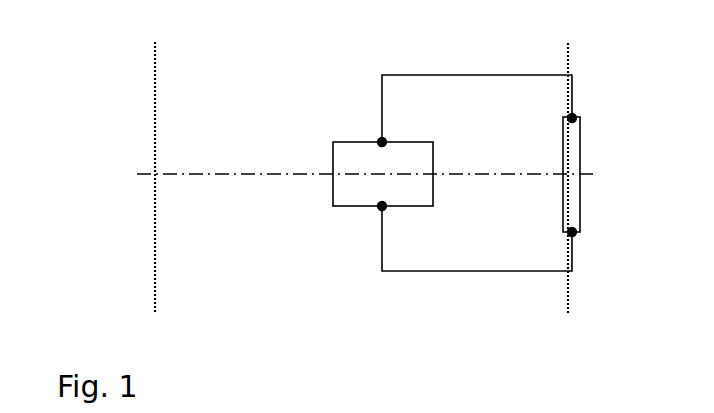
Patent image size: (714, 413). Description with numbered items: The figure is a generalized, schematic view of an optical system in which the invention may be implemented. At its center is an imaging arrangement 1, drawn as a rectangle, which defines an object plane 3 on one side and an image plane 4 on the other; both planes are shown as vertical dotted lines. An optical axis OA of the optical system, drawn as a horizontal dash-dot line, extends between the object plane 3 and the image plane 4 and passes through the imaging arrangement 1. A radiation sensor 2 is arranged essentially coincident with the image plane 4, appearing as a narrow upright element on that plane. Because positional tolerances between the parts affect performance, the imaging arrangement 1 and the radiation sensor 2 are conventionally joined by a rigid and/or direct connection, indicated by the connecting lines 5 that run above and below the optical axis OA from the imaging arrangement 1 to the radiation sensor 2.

The imaging arrangement 1 is at (350, 205).
The radiation sensor 2 is at (580, 207).
The object plane 3 is at (155, 263).
The image plane 4 is at (568, 288).
The connecting lines 5 is at (455, 75).
The optical axis OA is at (302, 175).